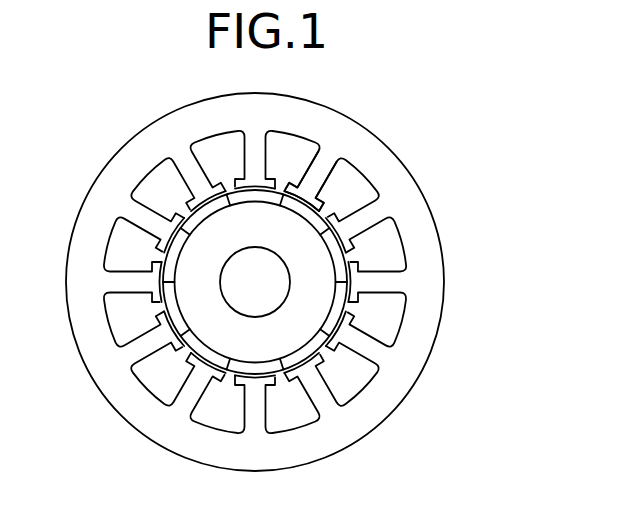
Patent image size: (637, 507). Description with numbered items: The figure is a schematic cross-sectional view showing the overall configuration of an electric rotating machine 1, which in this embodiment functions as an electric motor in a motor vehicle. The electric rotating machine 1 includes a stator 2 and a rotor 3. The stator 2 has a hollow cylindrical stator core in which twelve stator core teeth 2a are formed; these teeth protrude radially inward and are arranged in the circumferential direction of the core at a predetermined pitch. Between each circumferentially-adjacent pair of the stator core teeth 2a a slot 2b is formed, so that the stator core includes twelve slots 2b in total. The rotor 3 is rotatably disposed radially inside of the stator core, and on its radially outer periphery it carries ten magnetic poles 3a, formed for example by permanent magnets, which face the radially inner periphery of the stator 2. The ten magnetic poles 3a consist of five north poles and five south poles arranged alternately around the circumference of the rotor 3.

The electric rotating machine 1 is at (88, 124).
The stator 2 is at (317, 118).
The stator core teeth 2a is at (320, 175).
The slot 2b is at (388, 317).
The rotor 3 is at (293, 325).
The magnetic poles 3a is at (337, 253).